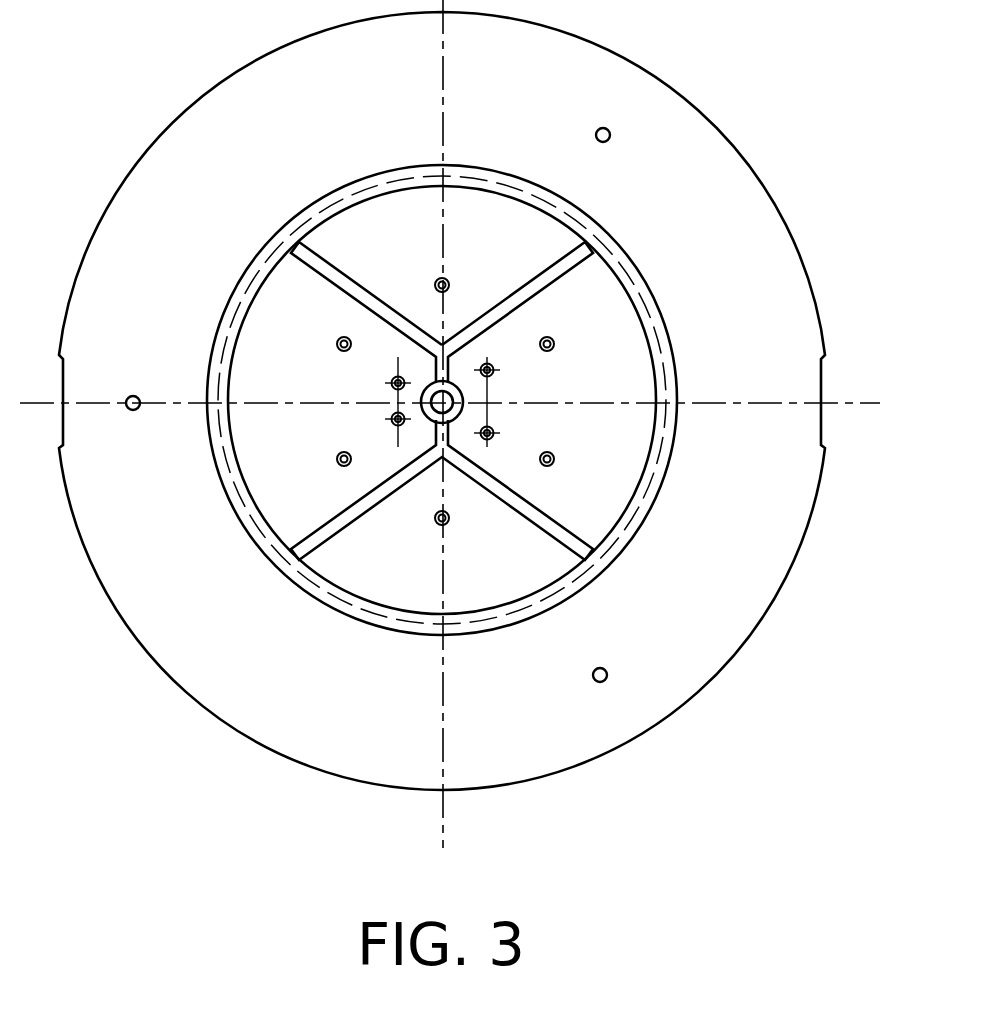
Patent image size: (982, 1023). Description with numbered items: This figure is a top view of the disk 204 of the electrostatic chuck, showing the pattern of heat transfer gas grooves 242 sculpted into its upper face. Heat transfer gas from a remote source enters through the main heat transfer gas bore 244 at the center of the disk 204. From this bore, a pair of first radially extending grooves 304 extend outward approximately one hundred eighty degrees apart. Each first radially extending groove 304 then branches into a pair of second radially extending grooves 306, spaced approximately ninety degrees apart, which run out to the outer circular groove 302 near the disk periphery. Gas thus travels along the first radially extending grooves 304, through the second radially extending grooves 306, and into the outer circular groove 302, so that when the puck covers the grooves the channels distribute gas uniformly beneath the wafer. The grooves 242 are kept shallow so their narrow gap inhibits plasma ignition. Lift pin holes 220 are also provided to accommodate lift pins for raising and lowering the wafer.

The disk 204 is at (712, 117).
The lift pin holes 220 is at (605, 670).
The outer circular groove 302 is at (247, 533).
The second radially extending grooves 306 is at (373, 292).
The heat transfer gas grooves 242 is at (567, 273).
The main heat transfer gas bore 244 is at (463, 403).
The first radially extending grooves 304 is at (440, 367).